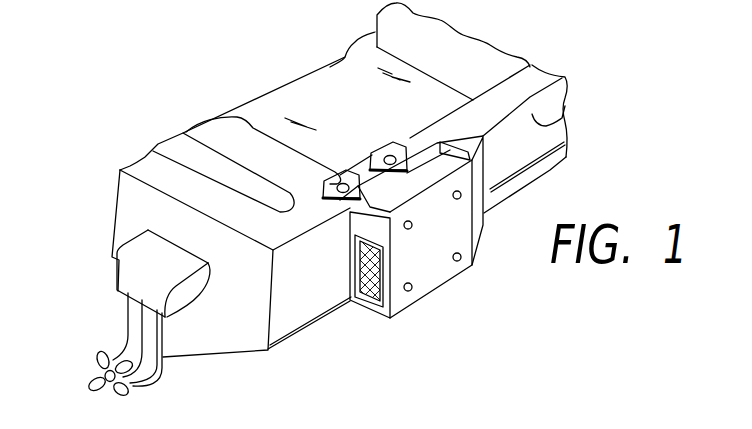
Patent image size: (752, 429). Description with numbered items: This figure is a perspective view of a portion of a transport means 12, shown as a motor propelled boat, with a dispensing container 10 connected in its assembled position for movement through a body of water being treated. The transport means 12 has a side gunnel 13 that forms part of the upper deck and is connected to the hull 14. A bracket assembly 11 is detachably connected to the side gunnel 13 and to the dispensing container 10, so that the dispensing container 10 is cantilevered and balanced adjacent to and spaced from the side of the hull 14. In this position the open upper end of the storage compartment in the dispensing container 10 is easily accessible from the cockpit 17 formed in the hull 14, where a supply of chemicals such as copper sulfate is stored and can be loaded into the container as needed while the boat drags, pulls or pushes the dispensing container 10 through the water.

The dispensing container 10 is at (433, 267).
The bracket assembly 11 is at (410, 145).
The transport means 12 is at (298, 282).
The side gunnel 13 is at (527, 86).
The hull 14 is at (563, 117).
The cockpit 17 is at (340, 113).